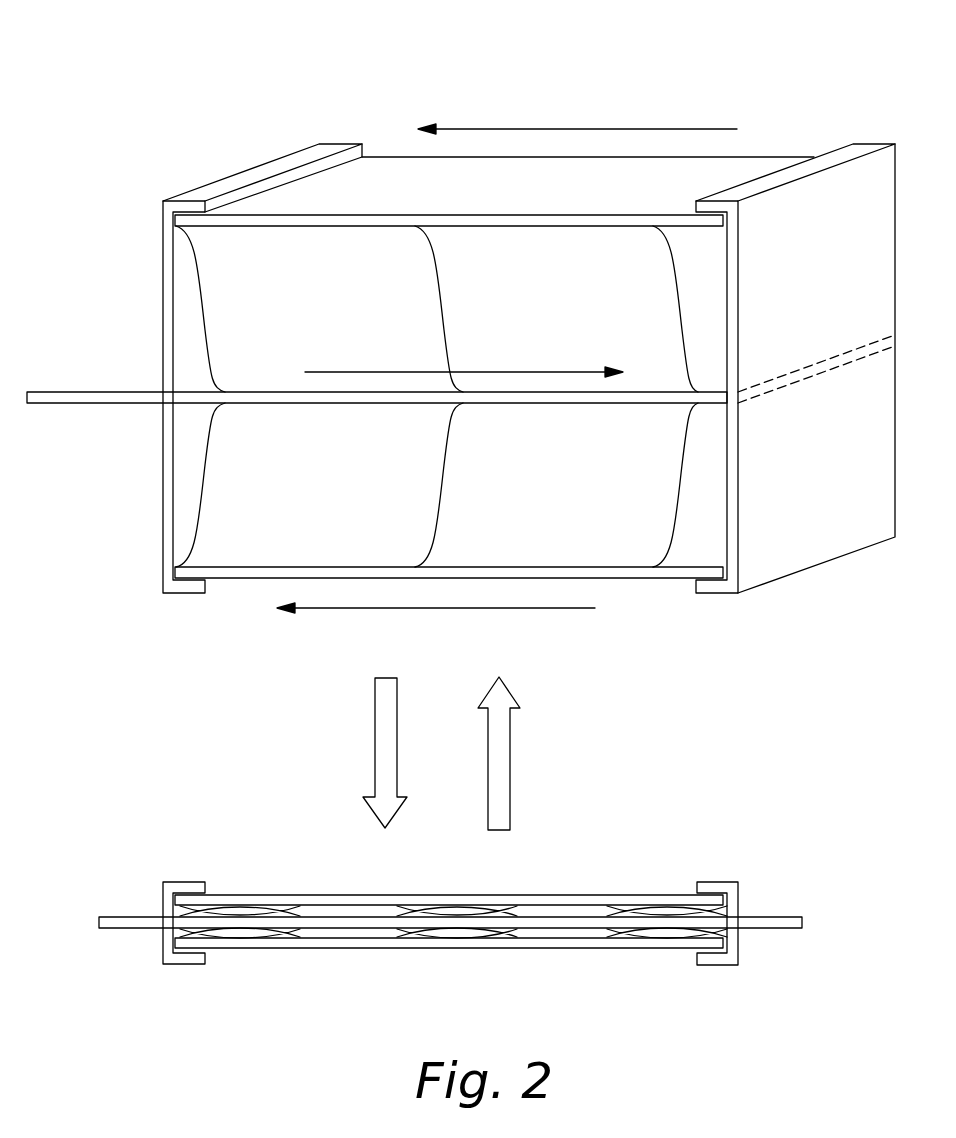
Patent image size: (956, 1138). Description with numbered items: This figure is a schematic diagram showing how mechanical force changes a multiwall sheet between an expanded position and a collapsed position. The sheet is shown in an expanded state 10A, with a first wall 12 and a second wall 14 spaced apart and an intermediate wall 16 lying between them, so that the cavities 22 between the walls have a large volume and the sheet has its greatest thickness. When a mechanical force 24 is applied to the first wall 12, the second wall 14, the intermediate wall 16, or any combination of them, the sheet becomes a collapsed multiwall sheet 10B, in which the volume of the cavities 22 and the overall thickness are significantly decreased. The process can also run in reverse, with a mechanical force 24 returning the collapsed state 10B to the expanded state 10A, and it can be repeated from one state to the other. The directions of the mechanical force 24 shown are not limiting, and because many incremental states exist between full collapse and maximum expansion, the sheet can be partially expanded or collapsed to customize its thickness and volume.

The expanded state of multiwall sheet 10A is at (797, 130).
The collapsed state of multiwall sheet 10B is at (798, 883).
The first wall 12 is at (260, 220).
The second wall 14 is at (255, 577).
The intermediate wall 16 is at (623, 398).
The cavities 22 is at (330, 287).
The mechanical force 24 is at (604, 129).